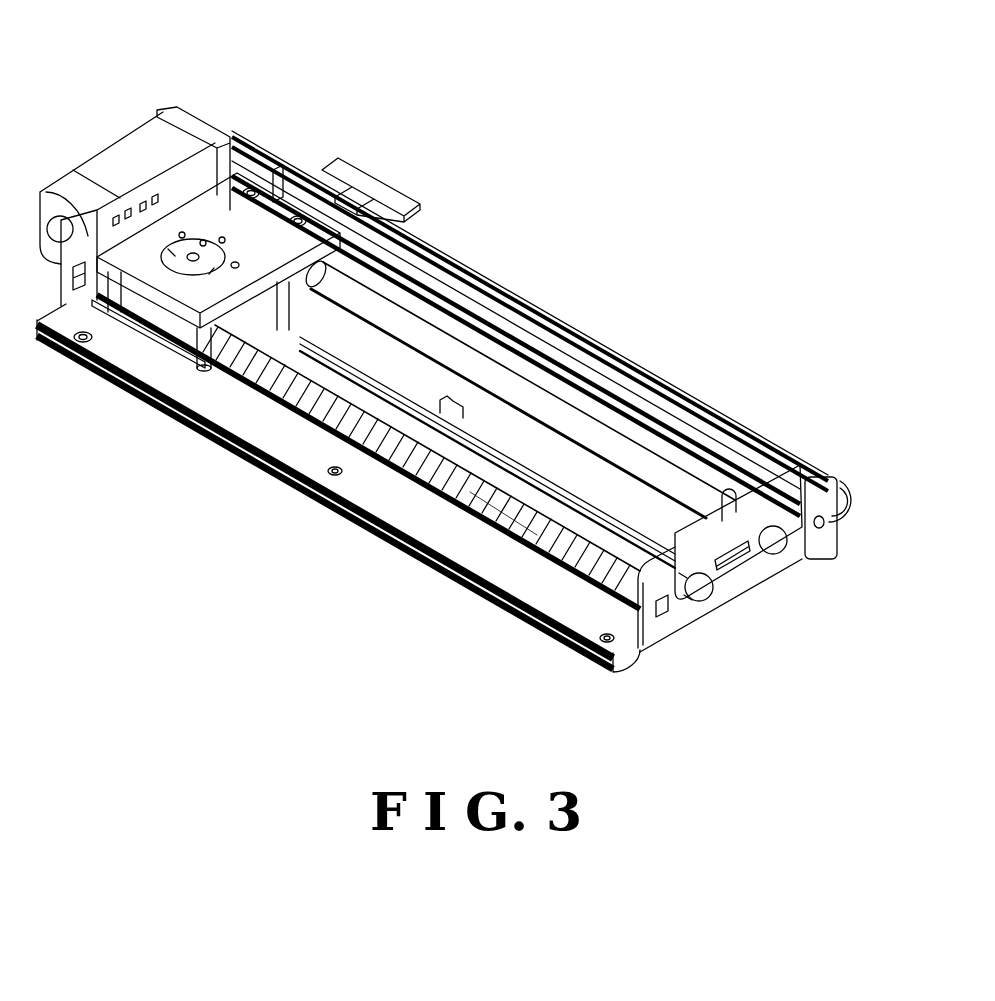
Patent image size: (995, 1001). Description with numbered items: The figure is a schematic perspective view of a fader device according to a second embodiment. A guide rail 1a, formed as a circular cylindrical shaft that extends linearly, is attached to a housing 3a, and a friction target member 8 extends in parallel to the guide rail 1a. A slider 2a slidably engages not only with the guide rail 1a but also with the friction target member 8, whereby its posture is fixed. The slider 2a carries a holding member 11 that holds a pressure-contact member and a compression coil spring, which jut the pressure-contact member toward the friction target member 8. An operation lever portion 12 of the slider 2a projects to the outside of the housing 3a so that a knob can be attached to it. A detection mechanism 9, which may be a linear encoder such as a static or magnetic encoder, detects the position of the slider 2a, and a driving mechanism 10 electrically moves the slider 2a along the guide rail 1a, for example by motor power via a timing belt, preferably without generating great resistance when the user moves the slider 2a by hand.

The driving mechanism 10 is at (131, 146).
The holding member 11 is at (203, 236).
The slider 2a is at (231, 214).
The operation lever portion 12 is at (372, 183).
The friction target member 8 is at (396, 405).
The guide rail 1a is at (568, 413).
The detection mechanism 9 is at (455, 507).
The housing 3a is at (734, 586).